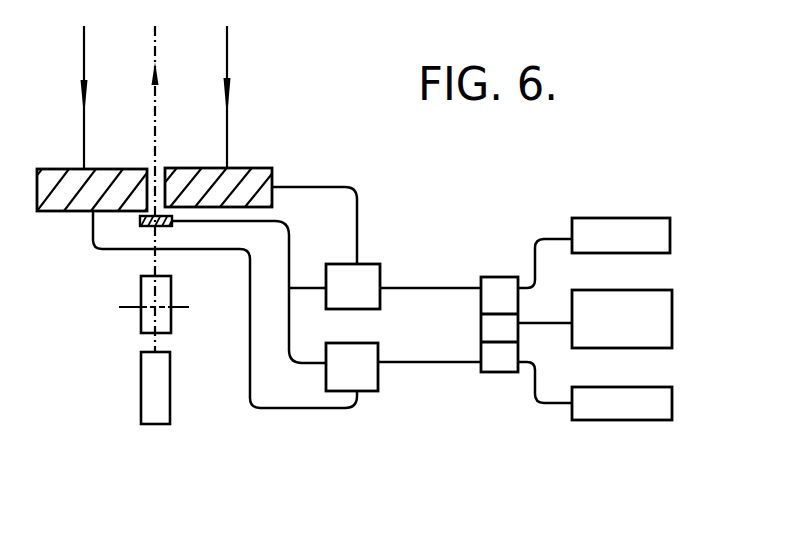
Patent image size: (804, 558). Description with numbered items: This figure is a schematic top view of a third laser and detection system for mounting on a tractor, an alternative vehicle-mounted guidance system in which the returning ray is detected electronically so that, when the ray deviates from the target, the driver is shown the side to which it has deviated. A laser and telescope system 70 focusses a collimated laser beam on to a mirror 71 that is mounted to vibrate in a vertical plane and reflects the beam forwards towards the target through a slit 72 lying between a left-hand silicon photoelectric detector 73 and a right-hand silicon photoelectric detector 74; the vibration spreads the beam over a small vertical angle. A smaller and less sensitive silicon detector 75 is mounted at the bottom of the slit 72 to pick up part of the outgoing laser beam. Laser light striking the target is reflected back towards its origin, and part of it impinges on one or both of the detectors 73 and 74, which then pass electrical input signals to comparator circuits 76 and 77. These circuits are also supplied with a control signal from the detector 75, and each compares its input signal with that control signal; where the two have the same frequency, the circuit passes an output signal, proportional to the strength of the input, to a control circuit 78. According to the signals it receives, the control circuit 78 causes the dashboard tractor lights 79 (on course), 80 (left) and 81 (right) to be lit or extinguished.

The laser and telescope system 70 is at (170, 397).
The mirror 71 is at (171, 292).
The slit 72 is at (162, 167).
The left-hand silicon photoelectric detector 73 is at (58, 169).
The right-hand silicon photoelectric detector 74 is at (263, 168).
The silicon detector 75 is at (140, 220).
The comparator circuit 76 is at (372, 273).
The comparator circuit 77 is at (370, 382).
The control circuit 78 is at (497, 374).
The dashboard tractor light ("on course") 79 is at (652, 345).
The dashboard tractor light ("left") 80 is at (657, 247).
The dashboard tractor light ("right") 81 is at (658, 407).